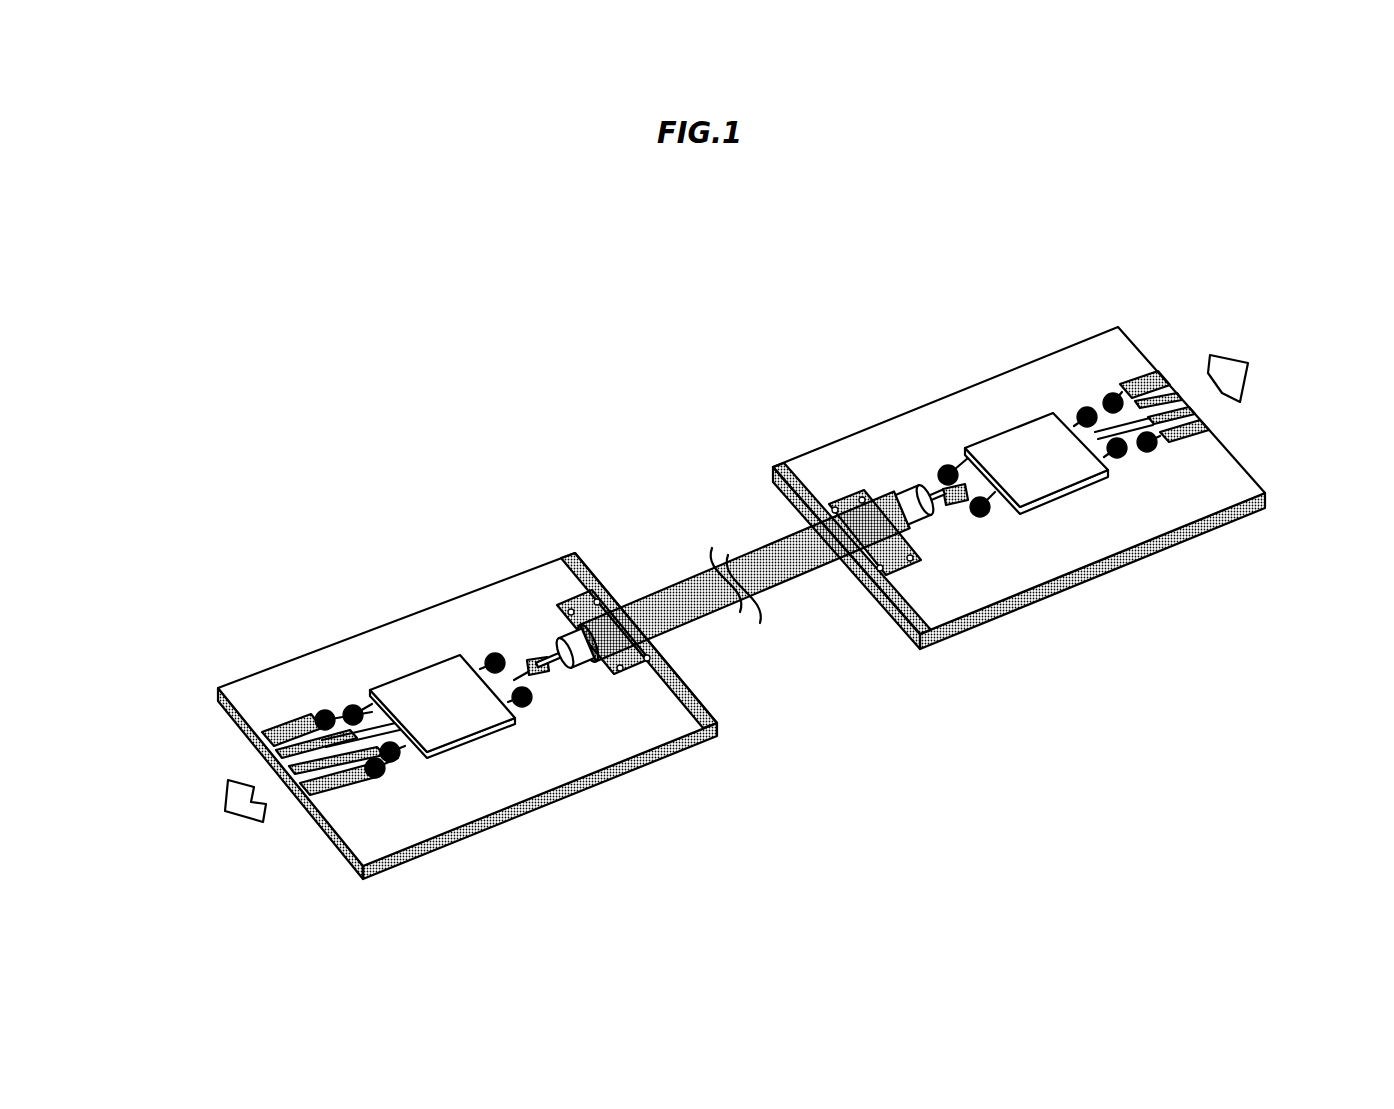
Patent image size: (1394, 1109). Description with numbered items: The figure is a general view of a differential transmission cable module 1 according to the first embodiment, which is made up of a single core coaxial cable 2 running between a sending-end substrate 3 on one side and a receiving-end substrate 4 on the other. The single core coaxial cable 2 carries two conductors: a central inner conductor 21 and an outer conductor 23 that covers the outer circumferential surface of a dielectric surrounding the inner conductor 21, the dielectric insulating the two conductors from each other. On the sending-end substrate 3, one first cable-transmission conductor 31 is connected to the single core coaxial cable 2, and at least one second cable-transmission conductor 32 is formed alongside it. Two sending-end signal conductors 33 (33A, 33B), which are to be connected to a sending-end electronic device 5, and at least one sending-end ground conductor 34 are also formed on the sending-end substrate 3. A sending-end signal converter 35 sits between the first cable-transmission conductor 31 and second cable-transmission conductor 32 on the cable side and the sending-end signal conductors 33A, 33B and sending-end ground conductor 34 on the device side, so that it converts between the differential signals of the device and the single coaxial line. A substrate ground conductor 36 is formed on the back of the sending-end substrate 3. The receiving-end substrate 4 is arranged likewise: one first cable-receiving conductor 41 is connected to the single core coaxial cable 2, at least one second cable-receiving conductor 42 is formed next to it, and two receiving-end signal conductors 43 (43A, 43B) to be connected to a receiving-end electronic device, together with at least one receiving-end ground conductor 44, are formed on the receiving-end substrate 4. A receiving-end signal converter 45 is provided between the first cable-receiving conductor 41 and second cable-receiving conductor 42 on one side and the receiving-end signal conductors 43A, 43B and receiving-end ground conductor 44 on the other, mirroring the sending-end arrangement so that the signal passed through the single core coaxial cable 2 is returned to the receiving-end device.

The differential transmission cable module 1 is at (1030, 242).
The single core coaxial cable 2 is at (748, 538).
The sending-end substrate 3 is at (300, 688).
The receiving-end substrate 4 is at (1075, 375).
The sending-end electronic device 5 is at (157, 818).
The inner conductor 21 is at (640, 678).
The outer conductor 23 is at (703, 618).
The first cable-transmission conductor 31 is at (528, 657).
The second cable-transmission conductor 32 is at (638, 681).
The sending-end signal conductor 33 is at (533, 855).
The sending-end signal conductor 33A is at (345, 795).
The sending-end signal conductor 33B is at (367, 797).
The sending-end ground conductor 34 is at (365, 752).
The sending-end signal converter 35 is at (423, 683).
The substrate ground conductor 36 is at (332, 823).
The first cable-receiving conductor 41 is at (952, 480).
The second cable-receiving conductor 42 is at (957, 497).
The receiving-end signal conductor 43 is at (1236, 628).
The receiving-end signal conductor 43A is at (1162, 402).
The receiving-end signal conductor 43B is at (1187, 420).
The receiving-end ground conductor 44 is at (1165, 398).
The receiving-end signal converter 45 is at (1008, 443).